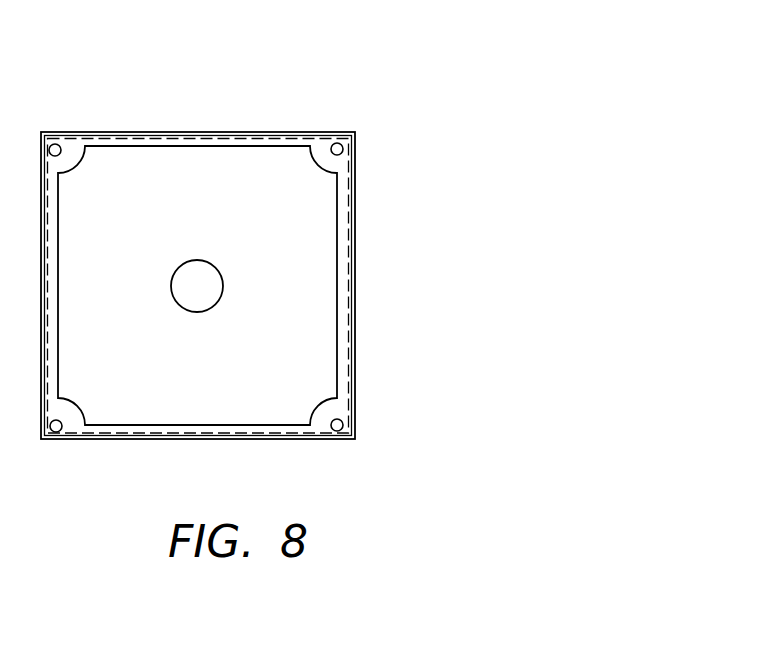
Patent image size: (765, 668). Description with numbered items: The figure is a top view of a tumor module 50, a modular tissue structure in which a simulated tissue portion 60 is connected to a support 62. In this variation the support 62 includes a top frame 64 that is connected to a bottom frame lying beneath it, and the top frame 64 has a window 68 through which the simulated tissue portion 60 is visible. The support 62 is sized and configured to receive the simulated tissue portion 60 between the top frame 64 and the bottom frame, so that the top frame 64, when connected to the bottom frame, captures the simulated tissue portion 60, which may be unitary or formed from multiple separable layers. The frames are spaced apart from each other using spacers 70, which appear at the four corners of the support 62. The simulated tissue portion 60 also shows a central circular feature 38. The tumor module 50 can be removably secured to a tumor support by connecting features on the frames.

The tumor module 50 is at (238, 98).
The support 62 is at (355, 168).
The window 68 is at (168, 140).
The top frame 64 is at (280, 137).
The simulated tissue portion 60 is at (283, 250).
The central opening 38 is at (213, 295).
The spacers 70 is at (57, 144).